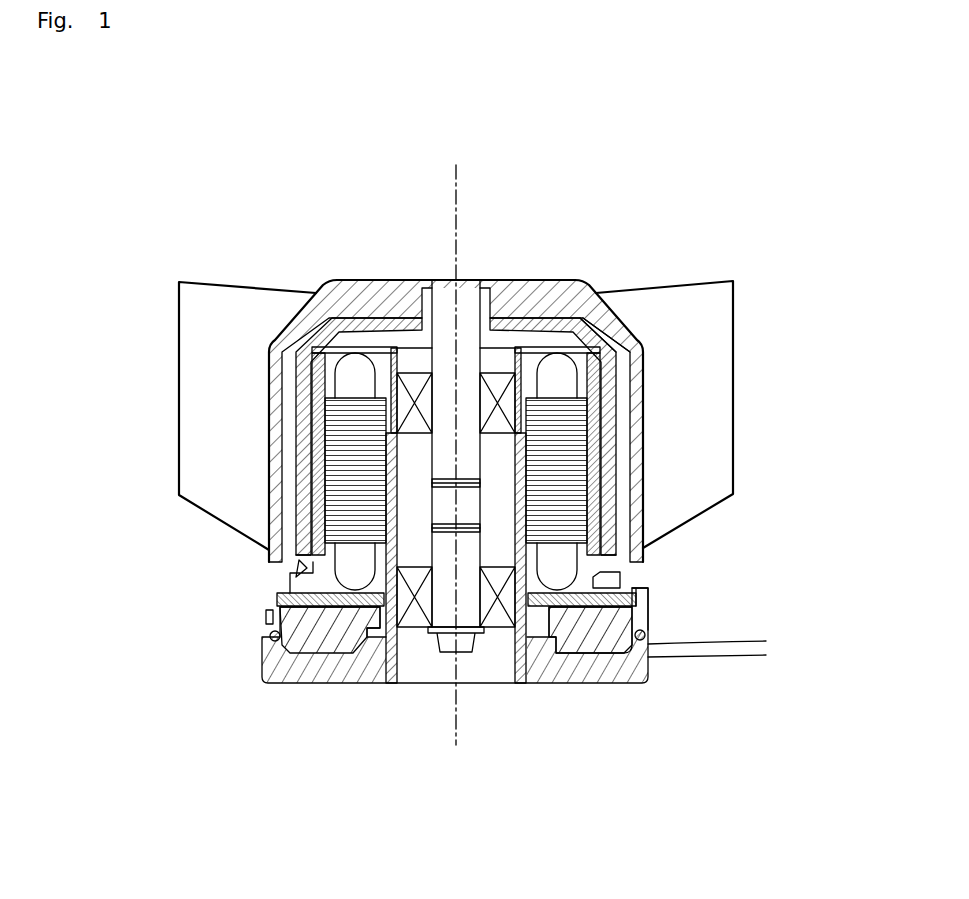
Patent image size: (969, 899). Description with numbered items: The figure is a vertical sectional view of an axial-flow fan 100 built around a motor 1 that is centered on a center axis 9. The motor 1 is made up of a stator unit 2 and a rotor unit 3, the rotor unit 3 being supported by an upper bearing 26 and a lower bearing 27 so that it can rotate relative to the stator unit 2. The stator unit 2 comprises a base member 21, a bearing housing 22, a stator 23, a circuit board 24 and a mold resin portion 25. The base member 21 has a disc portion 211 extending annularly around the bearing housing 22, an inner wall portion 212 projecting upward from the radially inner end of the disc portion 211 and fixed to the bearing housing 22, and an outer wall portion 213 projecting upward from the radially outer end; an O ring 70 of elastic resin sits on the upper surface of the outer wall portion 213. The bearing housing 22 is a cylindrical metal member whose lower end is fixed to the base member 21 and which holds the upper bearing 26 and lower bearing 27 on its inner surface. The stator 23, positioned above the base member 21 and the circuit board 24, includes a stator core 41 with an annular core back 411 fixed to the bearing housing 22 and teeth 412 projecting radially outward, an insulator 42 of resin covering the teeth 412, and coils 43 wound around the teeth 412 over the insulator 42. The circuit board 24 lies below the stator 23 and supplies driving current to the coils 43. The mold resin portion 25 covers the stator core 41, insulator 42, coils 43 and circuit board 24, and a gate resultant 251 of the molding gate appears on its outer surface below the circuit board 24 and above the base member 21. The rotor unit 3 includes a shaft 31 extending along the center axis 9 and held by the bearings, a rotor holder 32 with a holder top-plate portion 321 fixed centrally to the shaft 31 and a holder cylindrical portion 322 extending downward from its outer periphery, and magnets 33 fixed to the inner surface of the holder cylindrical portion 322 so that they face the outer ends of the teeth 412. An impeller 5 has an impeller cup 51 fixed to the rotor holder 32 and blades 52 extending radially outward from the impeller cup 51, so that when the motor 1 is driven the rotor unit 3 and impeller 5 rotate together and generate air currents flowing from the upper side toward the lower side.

The axial-flow fan 100 is at (375, 162).
The center axis 9 is at (454, 198).
The motor 1 is at (357, 745).
The stator unit 2 is at (347, 694).
The rotor unit 3 is at (300, 672).
The base member 21 is at (650, 748).
The disc portion 211 is at (590, 655).
The inner wall portion 212 is at (538, 650).
The outer wall portion 213 is at (632, 650).
The bearing housing 22 is at (400, 684).
The stator 23 is at (597, 470).
The circuit board 24 is at (637, 600).
The mold resin portion 25 is at (560, 435).
The upper bearing 26 is at (496, 380).
The lower bearing 27 is at (497, 612).
The gate resultant 251 is at (268, 614).
The shaft 31 is at (438, 332).
The rotor holder 32 is at (357, 226).
The holder top-plate portion 321 is at (372, 327).
The holder cylindrical portion 322 is at (302, 393).
The magnets 33 is at (312, 505).
The stator core 41 is at (677, 228).
The core back 411 is at (584, 332).
The teeth 412 is at (627, 355).
The insulator 42 is at (581, 587).
The coils 43 is at (623, 550).
The impeller 5 is at (132, 393).
The impeller cup 51 is at (272, 428).
The blades 52 is at (217, 462).
The O ring 70 is at (269, 631).